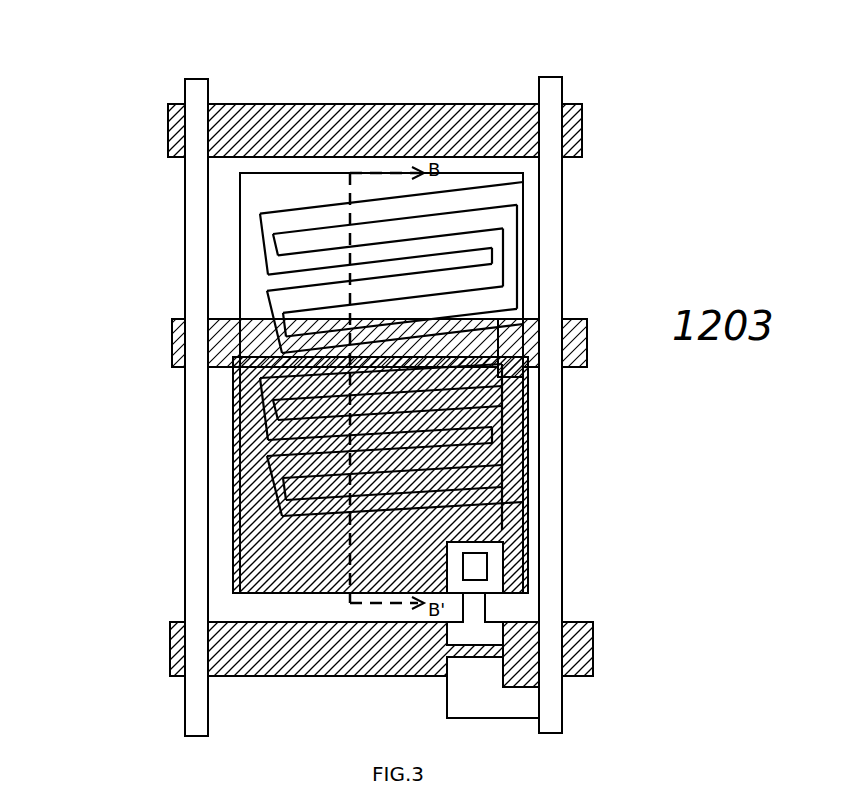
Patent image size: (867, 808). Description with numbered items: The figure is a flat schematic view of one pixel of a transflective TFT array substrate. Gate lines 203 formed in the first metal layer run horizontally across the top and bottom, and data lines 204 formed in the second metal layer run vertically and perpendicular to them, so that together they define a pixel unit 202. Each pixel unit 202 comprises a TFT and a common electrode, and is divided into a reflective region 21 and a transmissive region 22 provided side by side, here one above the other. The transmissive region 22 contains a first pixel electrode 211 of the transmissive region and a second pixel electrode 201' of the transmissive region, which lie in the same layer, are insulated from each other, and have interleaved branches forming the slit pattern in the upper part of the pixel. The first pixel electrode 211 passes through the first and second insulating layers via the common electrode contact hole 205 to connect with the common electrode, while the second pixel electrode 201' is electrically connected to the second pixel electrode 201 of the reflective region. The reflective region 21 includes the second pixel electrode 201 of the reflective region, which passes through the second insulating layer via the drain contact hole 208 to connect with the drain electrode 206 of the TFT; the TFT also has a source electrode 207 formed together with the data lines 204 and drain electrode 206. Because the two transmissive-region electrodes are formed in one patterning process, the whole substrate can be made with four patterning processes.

The reflective region 21 is at (235, 458).
The transmissive region 22 is at (253, 233).
The second pixel electrode of the reflective region 201 is at (482, 447).
The second pixel electrode of the transmissive region 201' is at (372, 266).
The pixel unit 202 is at (227, 408).
The gate line 203 is at (513, 132).
The data line 204 is at (555, 272).
The common electrode contact hole 205 is at (667, 322).
The drain electrode 206 is at (512, 618).
The source electrode 207 is at (470, 695).
The drain contact hole 208 is at (487, 570).
The first pixel electrode of the transmissive region 211 is at (515, 248).